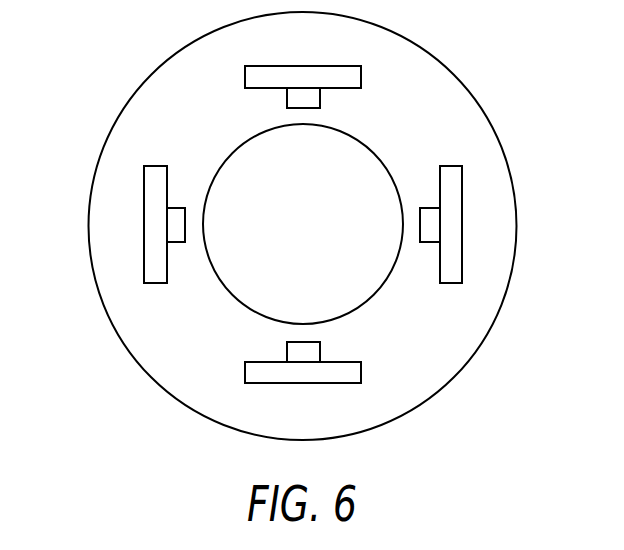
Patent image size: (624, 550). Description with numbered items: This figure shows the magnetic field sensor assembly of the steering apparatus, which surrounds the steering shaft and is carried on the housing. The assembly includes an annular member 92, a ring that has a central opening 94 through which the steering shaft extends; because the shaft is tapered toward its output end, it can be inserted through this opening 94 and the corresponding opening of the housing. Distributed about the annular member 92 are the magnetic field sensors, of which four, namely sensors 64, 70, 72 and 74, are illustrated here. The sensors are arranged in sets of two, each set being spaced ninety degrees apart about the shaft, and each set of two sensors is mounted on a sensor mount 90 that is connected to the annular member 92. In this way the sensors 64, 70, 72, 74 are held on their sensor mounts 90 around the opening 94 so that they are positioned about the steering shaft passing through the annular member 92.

The magnetic field sensor 64 is at (300, 97).
The magnetic field sensor 70 is at (430, 224).
The magnetic field sensor 72 is at (307, 353).
The magnetic field sensor 74 is at (176, 223).
The sensor mount 90 is at (342, 74).
The annular member 92 is at (430, 113).
The opening 94 is at (323, 262).